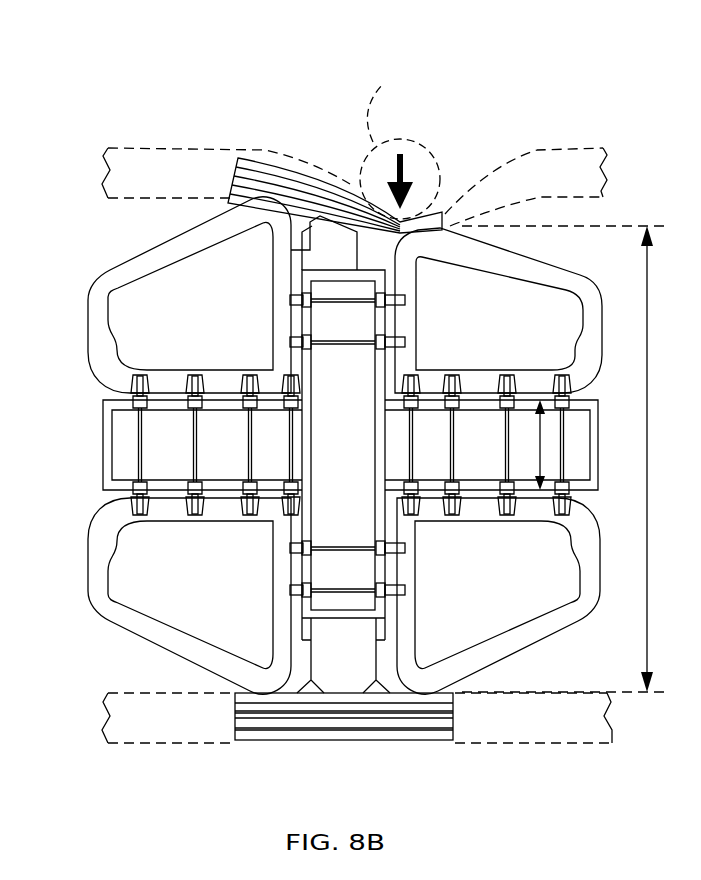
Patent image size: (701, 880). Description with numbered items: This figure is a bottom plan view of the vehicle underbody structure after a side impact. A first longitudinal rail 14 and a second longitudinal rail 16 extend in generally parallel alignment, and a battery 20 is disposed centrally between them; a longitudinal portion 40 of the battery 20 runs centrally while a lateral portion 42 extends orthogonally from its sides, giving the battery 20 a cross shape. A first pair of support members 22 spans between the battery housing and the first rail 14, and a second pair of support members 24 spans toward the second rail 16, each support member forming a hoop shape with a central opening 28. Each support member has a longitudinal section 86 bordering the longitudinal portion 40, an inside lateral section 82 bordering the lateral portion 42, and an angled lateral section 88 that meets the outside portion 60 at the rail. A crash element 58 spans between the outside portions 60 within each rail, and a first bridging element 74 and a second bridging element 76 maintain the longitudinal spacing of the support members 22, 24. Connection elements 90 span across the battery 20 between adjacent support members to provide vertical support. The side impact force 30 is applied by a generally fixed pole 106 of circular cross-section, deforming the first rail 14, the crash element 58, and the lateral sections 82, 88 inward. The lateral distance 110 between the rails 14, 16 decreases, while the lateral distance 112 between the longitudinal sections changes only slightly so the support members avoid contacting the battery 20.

The first longitudinal rail 14 is at (536, 157).
The second longitudinal rail 16 is at (577, 718).
The battery 20 is at (92, 443).
The first pair of support members 22 is at (99, 331).
The second pair of support members 24 is at (100, 605).
The central opening 28 is at (207, 304).
The side impact force 30 is at (407, 165).
The longitudinal portion of the battery 40 is at (122, 458).
The lateral portion of the battery 42 is at (316, 652).
The crash element 58 is at (298, 173).
The outside portions of the support members 60 is at (267, 210).
The first bridging element 74 is at (346, 215).
The second bridging element 76 is at (337, 652).
The inside lateral section 82 is at (282, 271).
The longitudinal section 86 is at (170, 380).
The angled lateral section 88 is at (163, 253).
The connection elements 90 is at (460, 437).
The fixed pole 106 is at (387, 101).
The lateral distance between the rails 110 is at (657, 478).
The lateral distance between the longitudinal sections 112 is at (547, 442).